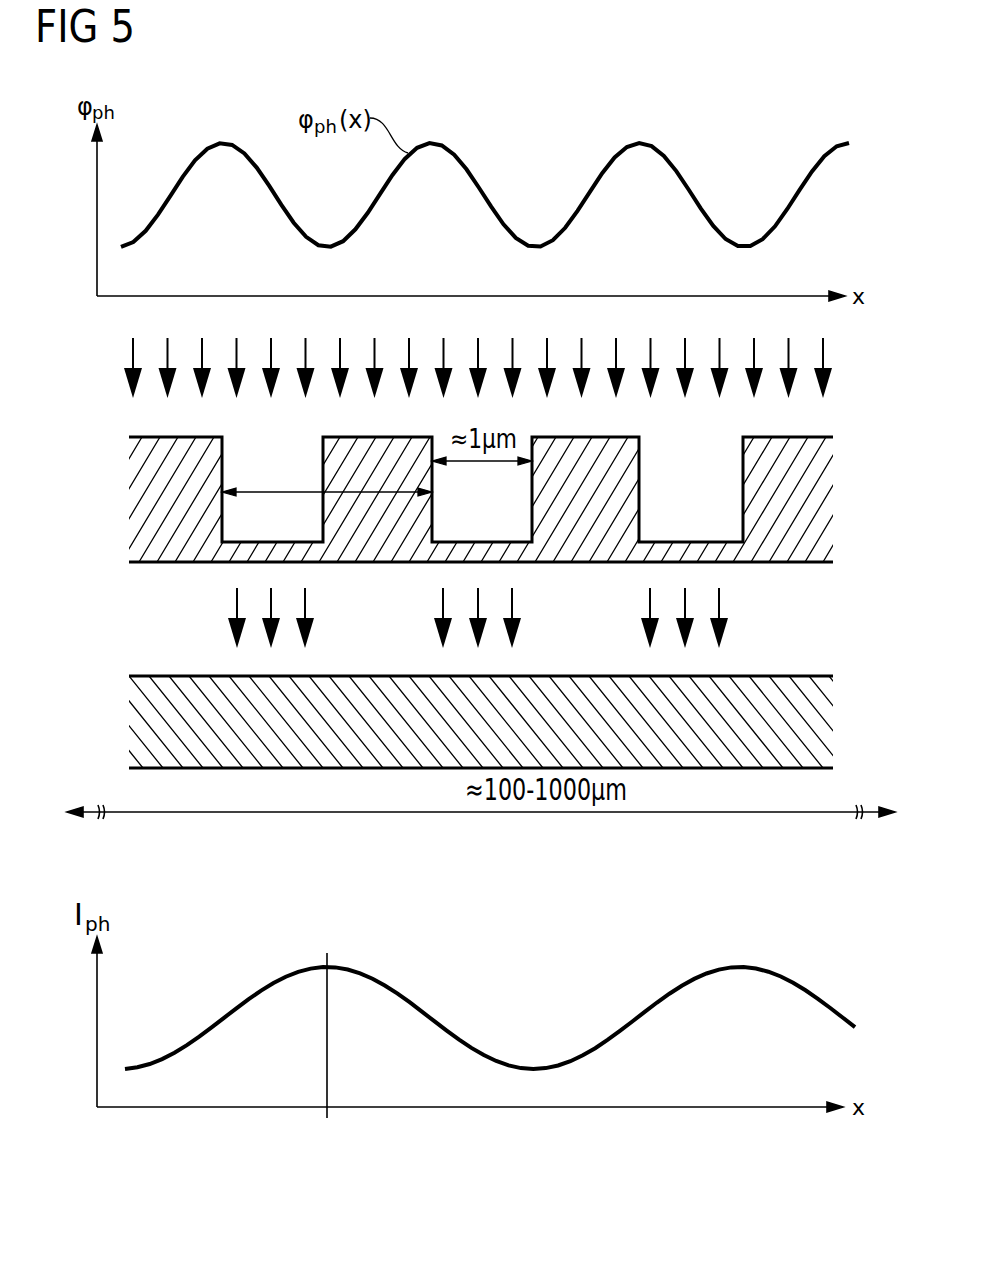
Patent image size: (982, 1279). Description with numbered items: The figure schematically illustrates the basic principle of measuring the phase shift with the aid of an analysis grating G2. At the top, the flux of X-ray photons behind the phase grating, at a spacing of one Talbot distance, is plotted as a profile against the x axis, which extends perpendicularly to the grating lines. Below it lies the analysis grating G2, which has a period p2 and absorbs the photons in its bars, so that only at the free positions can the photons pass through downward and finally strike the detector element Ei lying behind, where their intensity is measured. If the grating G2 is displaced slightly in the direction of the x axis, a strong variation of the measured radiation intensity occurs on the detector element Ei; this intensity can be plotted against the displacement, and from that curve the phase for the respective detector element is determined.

The analysis grating G2 is at (138, 486).
The detector element Ei is at (137, 712).
The period p2 is at (327, 477).